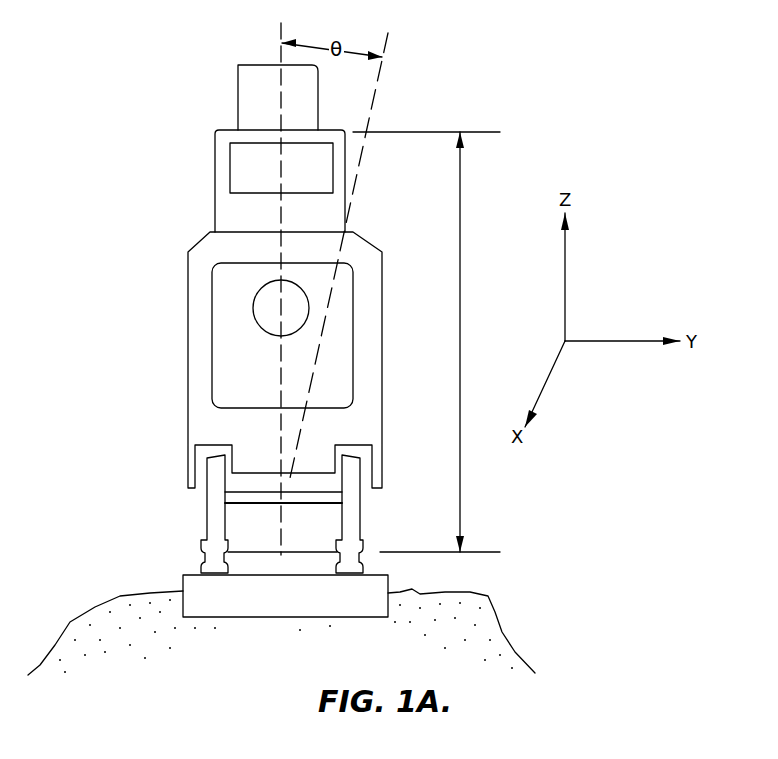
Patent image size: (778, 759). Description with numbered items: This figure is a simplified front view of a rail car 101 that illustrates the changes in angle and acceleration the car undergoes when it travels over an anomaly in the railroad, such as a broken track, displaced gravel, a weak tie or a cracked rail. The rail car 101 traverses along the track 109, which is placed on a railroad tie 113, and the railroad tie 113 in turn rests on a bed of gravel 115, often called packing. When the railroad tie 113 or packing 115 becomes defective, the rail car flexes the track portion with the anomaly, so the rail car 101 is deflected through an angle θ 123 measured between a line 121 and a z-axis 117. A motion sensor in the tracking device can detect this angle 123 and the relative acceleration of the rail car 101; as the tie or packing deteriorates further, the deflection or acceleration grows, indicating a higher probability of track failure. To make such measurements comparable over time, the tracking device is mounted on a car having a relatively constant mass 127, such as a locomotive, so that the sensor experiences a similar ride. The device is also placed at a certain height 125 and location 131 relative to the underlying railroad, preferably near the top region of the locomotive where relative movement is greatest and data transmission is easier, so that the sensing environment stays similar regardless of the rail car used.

The rail car 101 is at (373, 247).
The track 109 is at (341, 577).
The railroad tie 113 is at (250, 610).
The bed of gravel 115 is at (458, 592).
The z-axis 117 is at (282, 78).
The line 121 is at (378, 85).
The angle θ 123 is at (338, 34).
The height 125 is at (460, 357).
The constant mass 127 is at (198, 348).
The location 131 is at (241, 553).